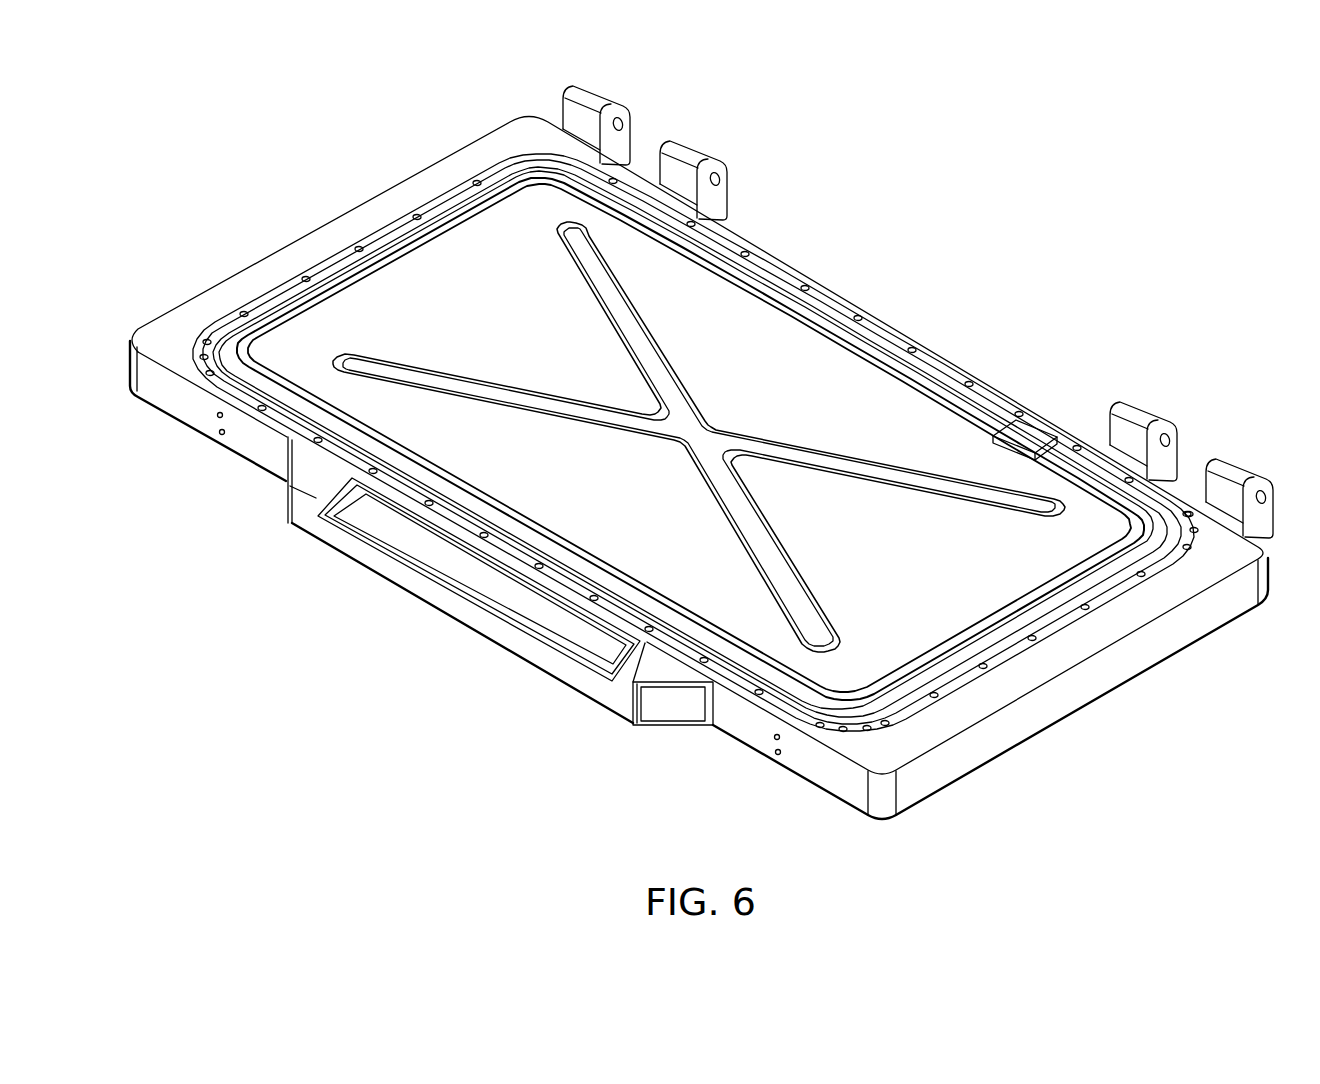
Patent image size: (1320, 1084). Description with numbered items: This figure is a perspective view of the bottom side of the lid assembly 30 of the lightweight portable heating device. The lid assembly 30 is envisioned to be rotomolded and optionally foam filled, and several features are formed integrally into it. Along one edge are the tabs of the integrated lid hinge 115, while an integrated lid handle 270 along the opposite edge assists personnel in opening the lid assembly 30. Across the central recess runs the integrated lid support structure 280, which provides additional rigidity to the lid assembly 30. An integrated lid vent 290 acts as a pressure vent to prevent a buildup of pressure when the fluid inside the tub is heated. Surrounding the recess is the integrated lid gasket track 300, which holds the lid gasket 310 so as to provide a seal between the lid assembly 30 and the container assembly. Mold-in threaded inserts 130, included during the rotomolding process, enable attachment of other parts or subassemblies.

The lid assembly 30 is at (852, 791).
The integrated lid hinge 115 is at (710, 154).
The mold-in threaded inserts 130 is at (212, 424).
The integrated lid handle 270 is at (522, 651).
The integrated lid support structure 280 is at (740, 321).
The integrated lid vent 290 is at (1063, 431).
The integrated lid gasket track 300 is at (350, 256).
The lid gasket 310 is at (478, 186).